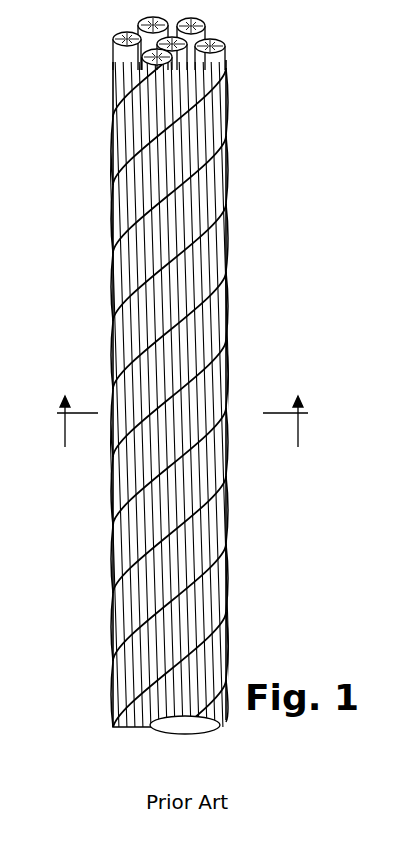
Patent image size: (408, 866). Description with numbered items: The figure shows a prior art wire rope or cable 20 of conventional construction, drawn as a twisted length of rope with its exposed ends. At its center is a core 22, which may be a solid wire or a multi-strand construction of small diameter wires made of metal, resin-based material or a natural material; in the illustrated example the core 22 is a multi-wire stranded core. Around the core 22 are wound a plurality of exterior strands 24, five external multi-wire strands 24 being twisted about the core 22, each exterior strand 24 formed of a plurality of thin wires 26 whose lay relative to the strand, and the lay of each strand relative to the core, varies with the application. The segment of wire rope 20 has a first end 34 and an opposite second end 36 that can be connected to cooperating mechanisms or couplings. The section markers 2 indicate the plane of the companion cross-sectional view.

The wire rope 20 is at (167, 398).
The core 22 is at (163, 43).
The exterior strand 24 is at (225, 362).
The thin wire 26 is at (222, 136).
The first end 34 is at (212, 598).
The second end 36 is at (113, 44).
The section line 2- 2 is at (182, 410).